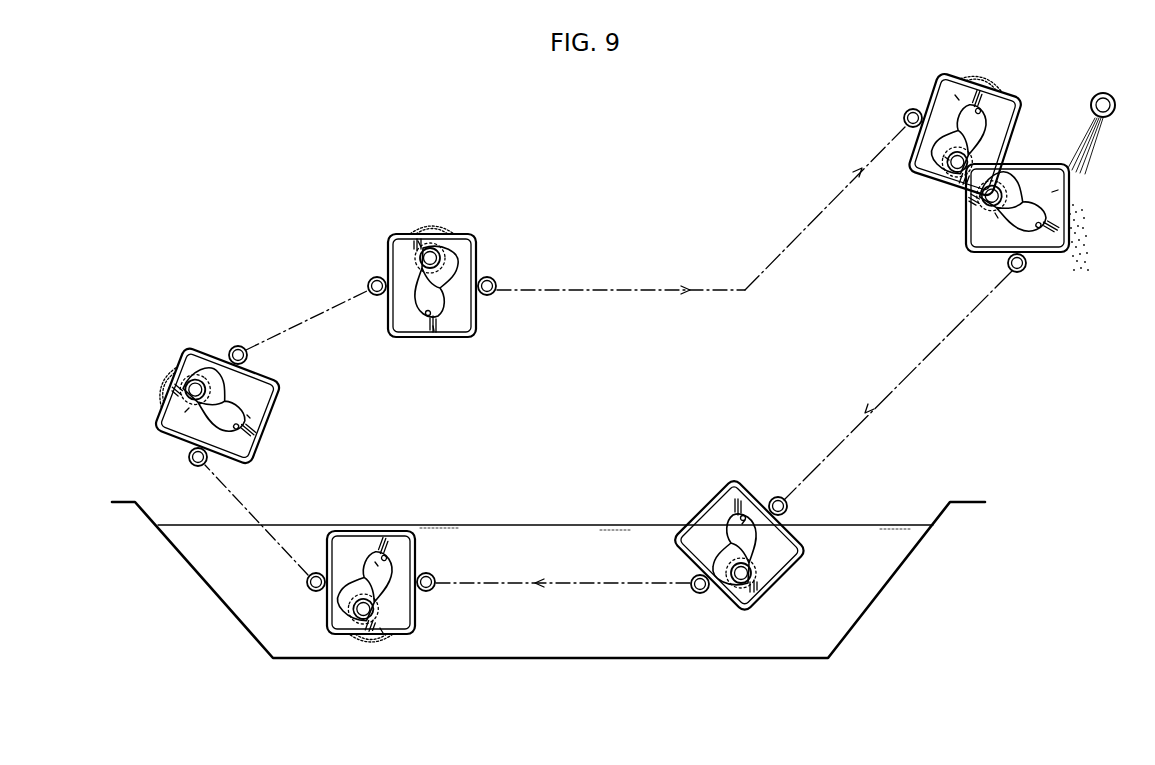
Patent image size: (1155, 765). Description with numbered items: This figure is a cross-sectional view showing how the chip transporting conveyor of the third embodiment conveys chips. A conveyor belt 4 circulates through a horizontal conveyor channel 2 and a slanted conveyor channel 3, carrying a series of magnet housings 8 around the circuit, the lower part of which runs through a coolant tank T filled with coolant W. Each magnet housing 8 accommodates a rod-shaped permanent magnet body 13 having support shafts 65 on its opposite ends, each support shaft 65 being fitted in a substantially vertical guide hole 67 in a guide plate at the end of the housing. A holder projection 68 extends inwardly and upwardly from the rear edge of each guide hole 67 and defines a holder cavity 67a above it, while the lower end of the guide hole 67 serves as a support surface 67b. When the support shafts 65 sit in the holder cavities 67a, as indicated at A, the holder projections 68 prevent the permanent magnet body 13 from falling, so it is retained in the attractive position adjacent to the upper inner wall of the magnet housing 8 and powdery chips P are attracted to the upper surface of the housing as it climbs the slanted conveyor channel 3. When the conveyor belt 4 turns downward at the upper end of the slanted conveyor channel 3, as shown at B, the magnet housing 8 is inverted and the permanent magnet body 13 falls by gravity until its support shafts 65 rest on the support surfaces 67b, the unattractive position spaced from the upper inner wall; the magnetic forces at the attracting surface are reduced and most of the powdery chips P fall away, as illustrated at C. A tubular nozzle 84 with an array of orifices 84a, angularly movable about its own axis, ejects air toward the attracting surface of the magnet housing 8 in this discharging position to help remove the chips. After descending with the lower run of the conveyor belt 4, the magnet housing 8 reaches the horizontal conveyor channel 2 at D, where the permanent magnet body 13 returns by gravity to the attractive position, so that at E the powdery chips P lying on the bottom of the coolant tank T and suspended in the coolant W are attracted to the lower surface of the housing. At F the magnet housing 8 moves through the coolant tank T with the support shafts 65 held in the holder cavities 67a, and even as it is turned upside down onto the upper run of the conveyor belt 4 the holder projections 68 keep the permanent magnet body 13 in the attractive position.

The horizontal conveyor channel 2 is at (606, 292).
The slanted conveyor channel 3 is at (822, 205).
The conveyor belt 4 is at (666, 289).
The magnet housing 8 is at (476, 246).
The permanent magnet body 13 is at (456, 272).
The support shaft 65 is at (421, 268).
The guide hole 67 is at (453, 285).
The holder cavity 67a is at (417, 243).
The support surface 67b is at (433, 327).
The holder projection 68 is at (1085, 232).
The tubular nozzle 84 is at (1103, 93).
The orifices 84a is at (1099, 120).
The powdery chips P is at (431, 228).
The coolant W is at (541, 525).
The coolant tank T is at (575, 658).
The attractive position state A is at (470, 230).
The inverting position B is at (943, 75).
The chip releasing position C is at (1088, 218).
The horizontal channel arrival position D is at (749, 477).
The chip attracting position in tank E is at (385, 529).
The tank traversing position F is at (204, 341).